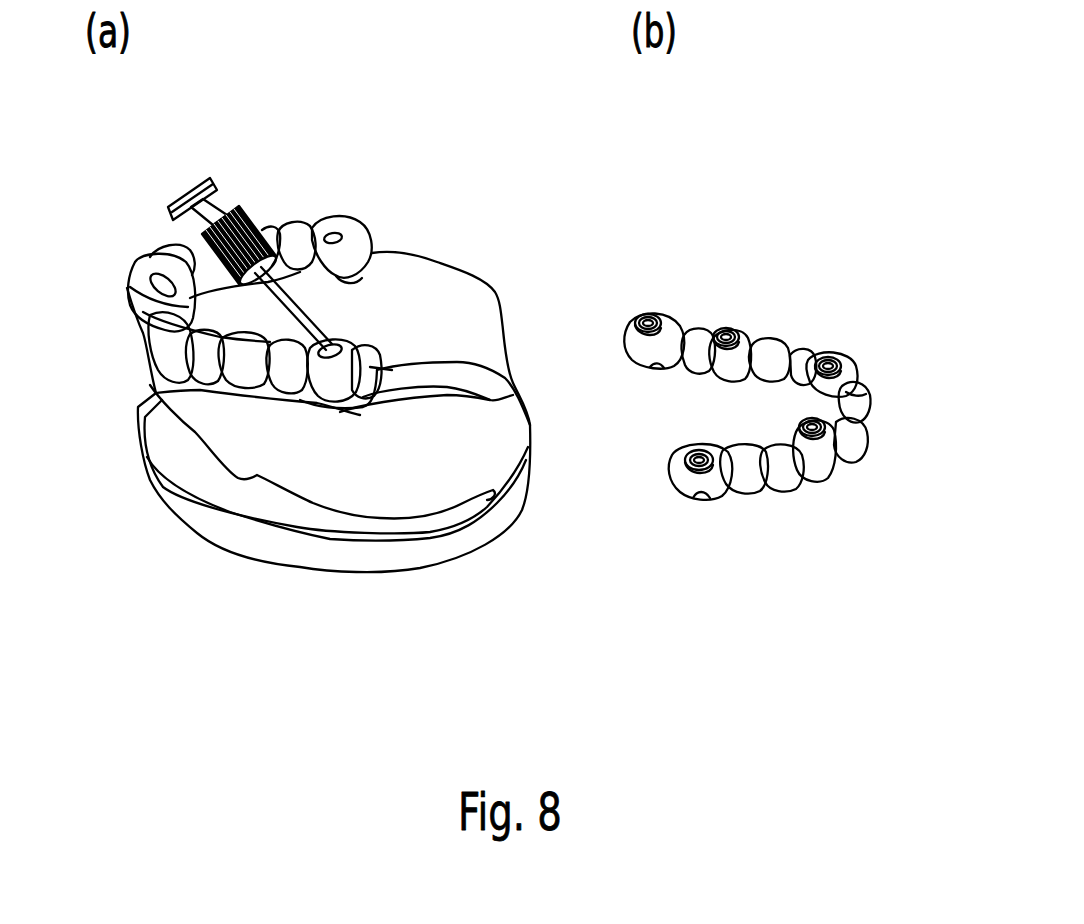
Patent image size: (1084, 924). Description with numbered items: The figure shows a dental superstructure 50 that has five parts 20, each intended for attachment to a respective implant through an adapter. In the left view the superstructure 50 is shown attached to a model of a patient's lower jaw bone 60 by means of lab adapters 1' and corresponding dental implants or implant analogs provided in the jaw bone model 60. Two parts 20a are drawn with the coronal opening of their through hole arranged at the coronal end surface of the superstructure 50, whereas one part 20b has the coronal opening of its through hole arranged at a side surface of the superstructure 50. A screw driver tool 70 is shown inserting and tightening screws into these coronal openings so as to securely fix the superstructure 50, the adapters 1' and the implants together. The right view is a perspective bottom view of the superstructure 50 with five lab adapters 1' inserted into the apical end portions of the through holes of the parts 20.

The screw driver tool 70 is at (217, 188).
The part 20a is at (342, 218).
The part 20b is at (137, 264).
The part 20 is at (743, 338).
The dental superstructure 50 is at (127, 322).
The model of a patient's lower jaw bone 60 is at (170, 457).
The lab adapter 1' is at (864, 373).